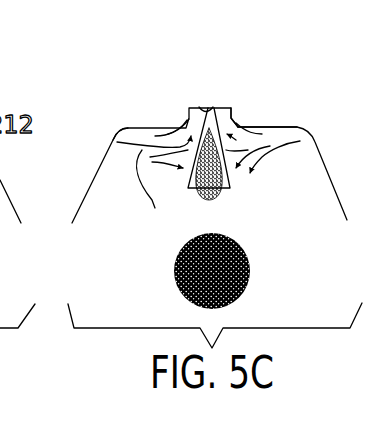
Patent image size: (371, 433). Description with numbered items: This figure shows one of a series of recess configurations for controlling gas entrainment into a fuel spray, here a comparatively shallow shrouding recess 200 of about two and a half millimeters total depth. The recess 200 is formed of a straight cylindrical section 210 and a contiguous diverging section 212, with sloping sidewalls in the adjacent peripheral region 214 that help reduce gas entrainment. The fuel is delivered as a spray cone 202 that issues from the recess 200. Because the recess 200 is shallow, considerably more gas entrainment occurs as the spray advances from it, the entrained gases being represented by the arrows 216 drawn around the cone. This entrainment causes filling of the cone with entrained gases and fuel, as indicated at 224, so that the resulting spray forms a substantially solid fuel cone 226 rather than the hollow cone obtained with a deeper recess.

The shrouding recess 200 is at (187, 118).
The spray cone 202 is at (200, 105).
The straight cylindrical section 210 is at (235, 110).
The diverging section 212 is at (236, 119).
The adjacent peripheral region 214 is at (118, 128).
The arrows representing entrained gases 216 is at (154, 193).
The filling of the cone with entrained gases and fuel 224 is at (221, 193).
The substantially solid fuel cone 226 is at (173, 268).